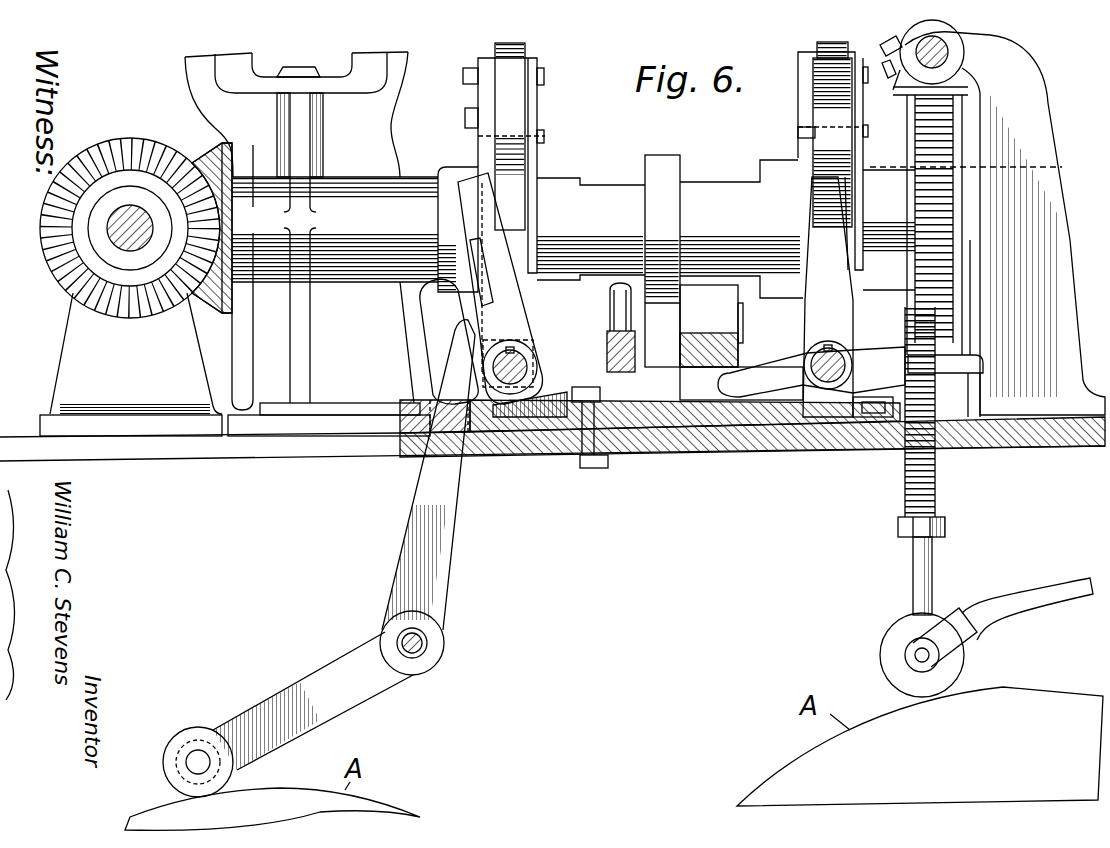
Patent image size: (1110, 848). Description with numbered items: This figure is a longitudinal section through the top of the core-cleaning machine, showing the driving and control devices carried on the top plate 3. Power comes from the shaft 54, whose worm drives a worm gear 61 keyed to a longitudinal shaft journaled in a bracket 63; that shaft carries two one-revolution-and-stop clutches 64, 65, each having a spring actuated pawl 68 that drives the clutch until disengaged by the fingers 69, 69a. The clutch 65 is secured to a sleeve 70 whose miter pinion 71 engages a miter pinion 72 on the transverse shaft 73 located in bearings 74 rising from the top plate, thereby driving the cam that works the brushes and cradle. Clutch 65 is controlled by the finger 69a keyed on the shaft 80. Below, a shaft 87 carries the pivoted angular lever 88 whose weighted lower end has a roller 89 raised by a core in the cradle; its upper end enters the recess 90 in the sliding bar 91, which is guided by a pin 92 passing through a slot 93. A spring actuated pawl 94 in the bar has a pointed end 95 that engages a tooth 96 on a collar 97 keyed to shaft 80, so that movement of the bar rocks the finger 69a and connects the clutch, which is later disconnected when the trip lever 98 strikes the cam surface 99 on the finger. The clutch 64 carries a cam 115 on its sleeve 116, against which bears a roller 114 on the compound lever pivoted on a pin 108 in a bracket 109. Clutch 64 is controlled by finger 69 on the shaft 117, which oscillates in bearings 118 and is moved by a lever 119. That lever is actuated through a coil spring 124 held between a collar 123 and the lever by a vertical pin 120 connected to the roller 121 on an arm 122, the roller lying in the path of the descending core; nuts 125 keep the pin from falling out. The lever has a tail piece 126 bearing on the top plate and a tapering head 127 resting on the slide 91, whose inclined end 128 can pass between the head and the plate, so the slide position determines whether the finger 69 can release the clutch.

The top plate 3 is at (790, 430).
The shaft 54 is at (958, 55).
The worm gear 61 is at (946, 133).
The bracket 63 is at (1045, 135).
The one-revolution-and-stop clutch 64 is at (856, 110).
The one-revolution-and-stop clutch 65 is at (540, 63).
The spring actuated pawl 68 is at (670, 169).
The finger 69 is at (840, 300).
The finger 69a is at (522, 296).
The sleeve 70 is at (448, 205).
The miter pinion 71 is at (224, 292).
The miter pinion 72 is at (70, 278).
The transverse shaft 73 is at (130, 245).
The bearings 74 is at (195, 383).
The shaft 80 is at (528, 366).
The shaft 87 is at (418, 643).
The angular lever 88 is at (448, 545).
The roller 89 is at (195, 728).
The recess or passage 90 is at (412, 452).
The sliding bar 91 is at (718, 420).
The pin 92 is at (600, 457).
The slot 93 is at (643, 448).
The spring actuated pawl 94 is at (478, 448).
The pointed end 95 is at (568, 378).
The tooth 96 is at (548, 392).
The collar 97 is at (518, 352).
The trip lever 98 is at (466, 100).
The cam surface 99 is at (460, 265).
The pin 108 is at (743, 316).
The bracket 109 is at (718, 296).
The roller 114 is at (630, 372).
The cam 115 is at (660, 155).
The sleeve 116 is at (720, 182).
The shaft 117 is at (846, 420).
The bearings 118 is at (862, 410).
The lever 119 is at (872, 368).
The vertical pin 120 is at (914, 566).
The roller 121 is at (964, 655).
The arm 122 is at (1026, 600).
The collar 123 is at (946, 520).
The coil spring 124 is at (938, 475).
The nuts 125 is at (905, 298).
The tail piece 126 is at (970, 382).
The tapering head 127 is at (745, 375).
The inclined end 128 is at (780, 440).